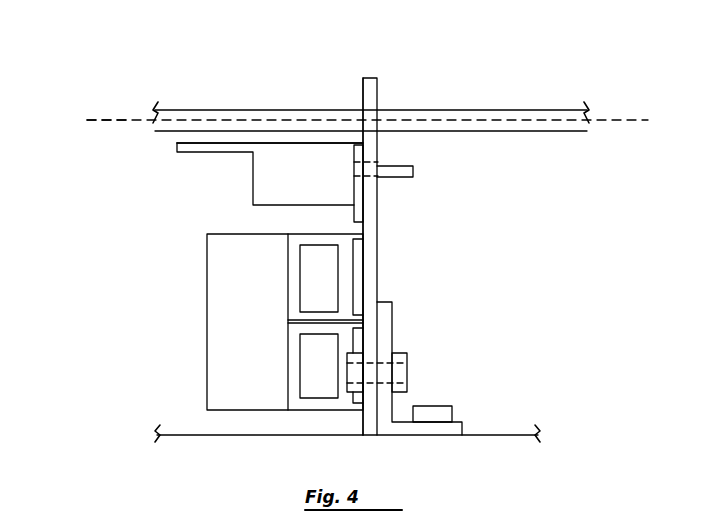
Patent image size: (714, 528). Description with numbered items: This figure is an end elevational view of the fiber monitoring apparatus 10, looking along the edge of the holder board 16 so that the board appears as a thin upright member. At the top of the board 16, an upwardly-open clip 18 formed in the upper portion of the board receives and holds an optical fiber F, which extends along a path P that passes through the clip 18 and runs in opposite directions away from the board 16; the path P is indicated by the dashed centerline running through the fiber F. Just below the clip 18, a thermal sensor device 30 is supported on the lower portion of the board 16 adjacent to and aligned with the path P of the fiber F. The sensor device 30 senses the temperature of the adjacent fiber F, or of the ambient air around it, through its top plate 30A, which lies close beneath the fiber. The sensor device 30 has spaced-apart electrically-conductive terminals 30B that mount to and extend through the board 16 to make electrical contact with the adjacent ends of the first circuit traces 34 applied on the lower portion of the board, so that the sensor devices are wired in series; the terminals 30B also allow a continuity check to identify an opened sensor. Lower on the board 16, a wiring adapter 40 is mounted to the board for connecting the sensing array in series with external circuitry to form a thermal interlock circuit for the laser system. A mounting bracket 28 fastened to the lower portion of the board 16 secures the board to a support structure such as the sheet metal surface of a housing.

The fiber monitoring apparatus 10 is at (575, 92).
The holder board 16 is at (377, 268).
The clips 18 is at (377, 92).
The mounting bracket 28 is at (385, 328).
The thermal sensor device 30 is at (273, 182).
The top plate 30A is at (315, 143).
The electrically-conductive terminals 30B is at (400, 168).
The first circuit traces 34 is at (358, 197).
The wiring adapter 40 is at (230, 327).
The optical fiber F is at (232, 110).
The path P is at (122, 118).